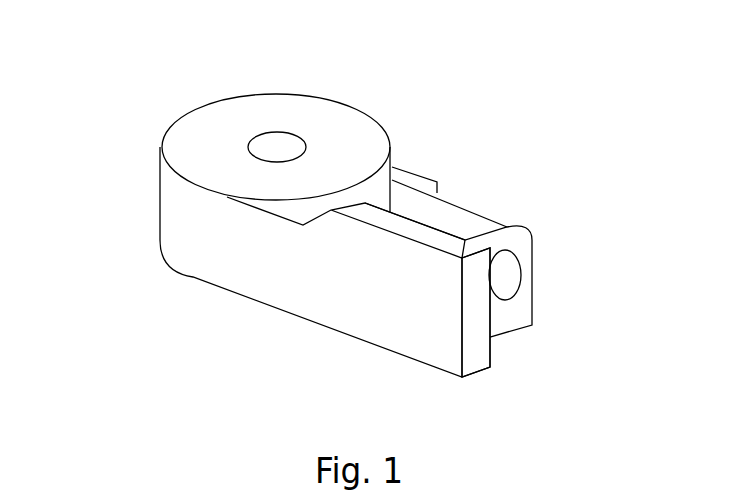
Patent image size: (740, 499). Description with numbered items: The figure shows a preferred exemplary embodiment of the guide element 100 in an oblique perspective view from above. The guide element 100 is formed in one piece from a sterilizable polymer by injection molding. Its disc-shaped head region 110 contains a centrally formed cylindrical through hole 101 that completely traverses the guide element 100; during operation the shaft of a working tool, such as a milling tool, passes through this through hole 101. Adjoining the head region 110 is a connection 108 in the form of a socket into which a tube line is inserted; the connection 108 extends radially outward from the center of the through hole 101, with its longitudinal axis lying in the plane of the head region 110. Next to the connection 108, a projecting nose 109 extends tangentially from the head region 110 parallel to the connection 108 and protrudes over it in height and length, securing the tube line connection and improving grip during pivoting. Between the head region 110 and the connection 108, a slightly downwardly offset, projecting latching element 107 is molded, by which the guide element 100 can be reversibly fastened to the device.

The guide element 100 is at (405, 79).
The through hole 101 is at (275, 147).
The latching element 107 is at (407, 173).
The connection 108 is at (503, 273).
The nose 109 is at (472, 353).
The head region 110 is at (204, 148).